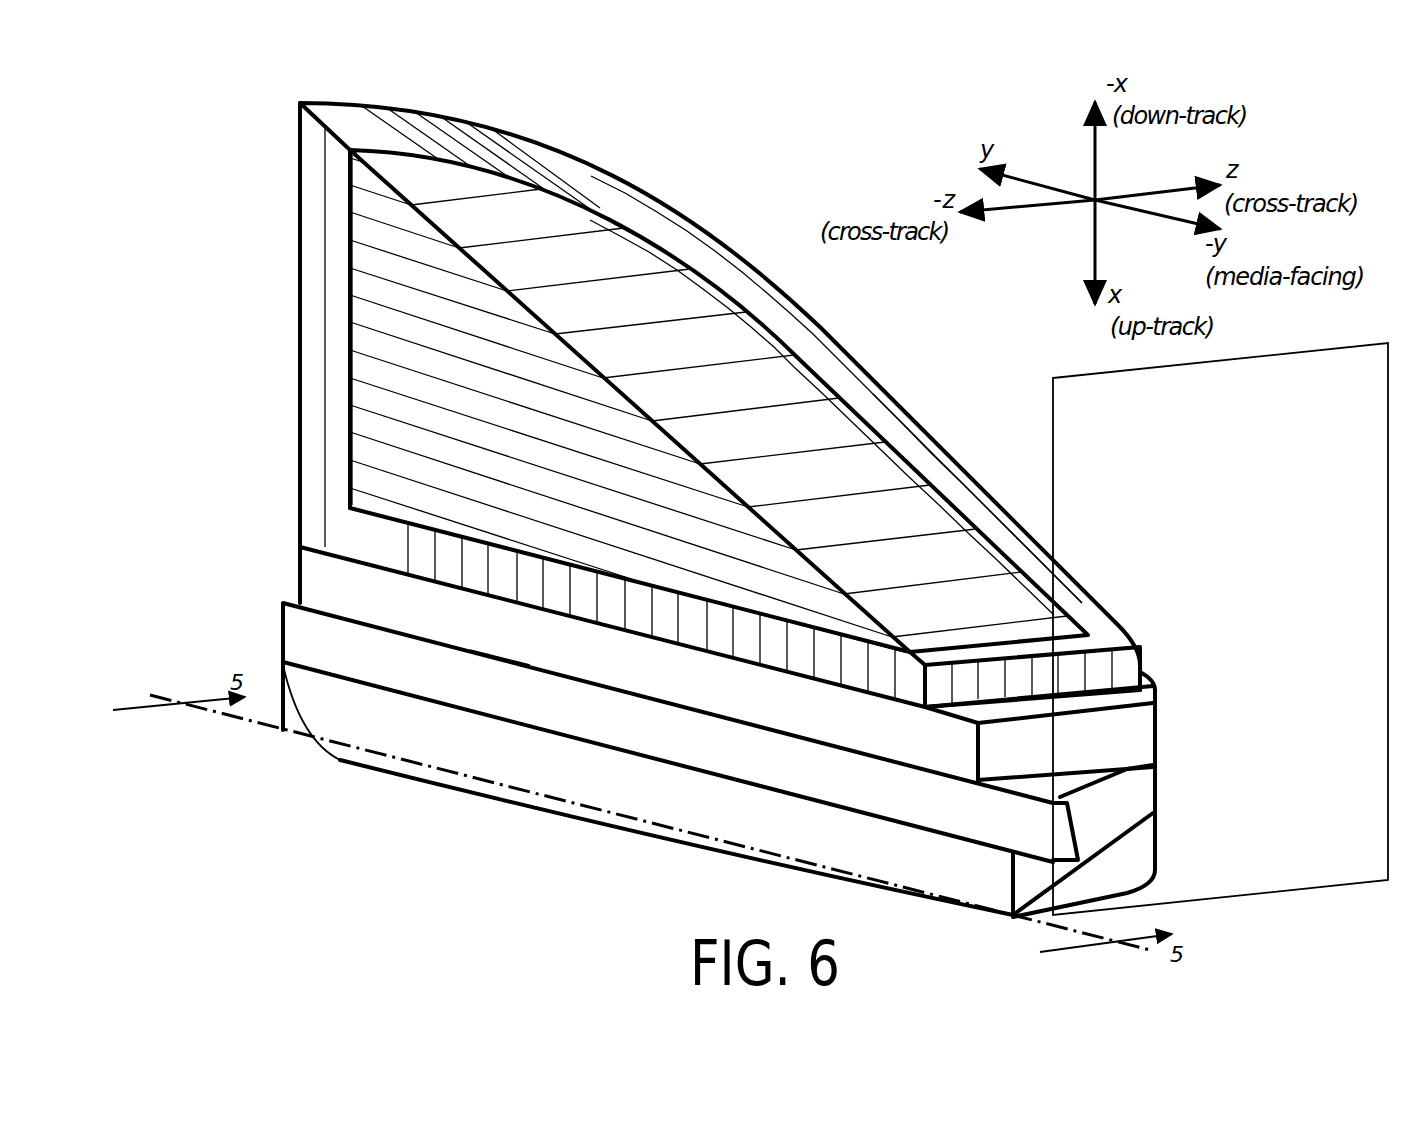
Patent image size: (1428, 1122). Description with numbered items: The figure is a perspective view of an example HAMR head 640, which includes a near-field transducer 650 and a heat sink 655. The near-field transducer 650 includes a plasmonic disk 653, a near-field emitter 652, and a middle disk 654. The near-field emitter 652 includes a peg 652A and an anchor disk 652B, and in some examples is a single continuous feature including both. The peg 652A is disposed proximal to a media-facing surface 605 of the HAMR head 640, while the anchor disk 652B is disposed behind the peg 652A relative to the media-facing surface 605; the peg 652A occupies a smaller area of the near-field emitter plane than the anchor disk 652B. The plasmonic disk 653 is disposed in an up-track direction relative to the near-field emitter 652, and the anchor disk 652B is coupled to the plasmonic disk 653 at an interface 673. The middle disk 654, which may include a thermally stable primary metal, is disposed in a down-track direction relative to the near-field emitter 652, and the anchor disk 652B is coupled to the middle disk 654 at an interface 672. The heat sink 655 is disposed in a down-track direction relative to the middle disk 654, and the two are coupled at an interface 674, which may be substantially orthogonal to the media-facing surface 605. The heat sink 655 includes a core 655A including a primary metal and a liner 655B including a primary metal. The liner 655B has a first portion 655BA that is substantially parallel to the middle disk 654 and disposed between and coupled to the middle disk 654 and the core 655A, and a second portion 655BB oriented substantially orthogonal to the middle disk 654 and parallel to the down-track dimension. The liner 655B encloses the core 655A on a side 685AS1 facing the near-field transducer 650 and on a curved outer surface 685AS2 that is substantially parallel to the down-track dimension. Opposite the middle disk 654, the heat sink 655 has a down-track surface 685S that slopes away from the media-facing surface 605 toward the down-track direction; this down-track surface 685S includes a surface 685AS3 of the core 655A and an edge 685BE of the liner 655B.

The HAMR head 640 is at (744, 180).
The heat sink 655 is at (980, 335).
The core 655A is at (756, 403).
The liner 655B is at (667, 404).
The second portion of liner 655BB is at (430, 124).
The first portion of liner 655BA is at (777, 660).
The down-track surface 685S is at (885, 384).
The edge of liner 685BE is at (902, 437).
The side of core 685AS1 is at (561, 558).
The curved outer surface of core 685AS2 is at (359, 257).
The surface of core 685AS3 is at (1000, 596).
The interface 674 is at (300, 545).
The interface 672 is at (498, 652).
The interface 673 is at (474, 707).
The middle disk 654 is at (718, 731).
The plasmonic disk 653 is at (719, 791).
The near-field emitter 652 is at (440, 787).
The peg 652A is at (1067, 838).
The anchor disk 652B is at (296, 640).
The near-field transducer 650 is at (1292, 741).
The media-facing surface 605 is at (1220, 629).